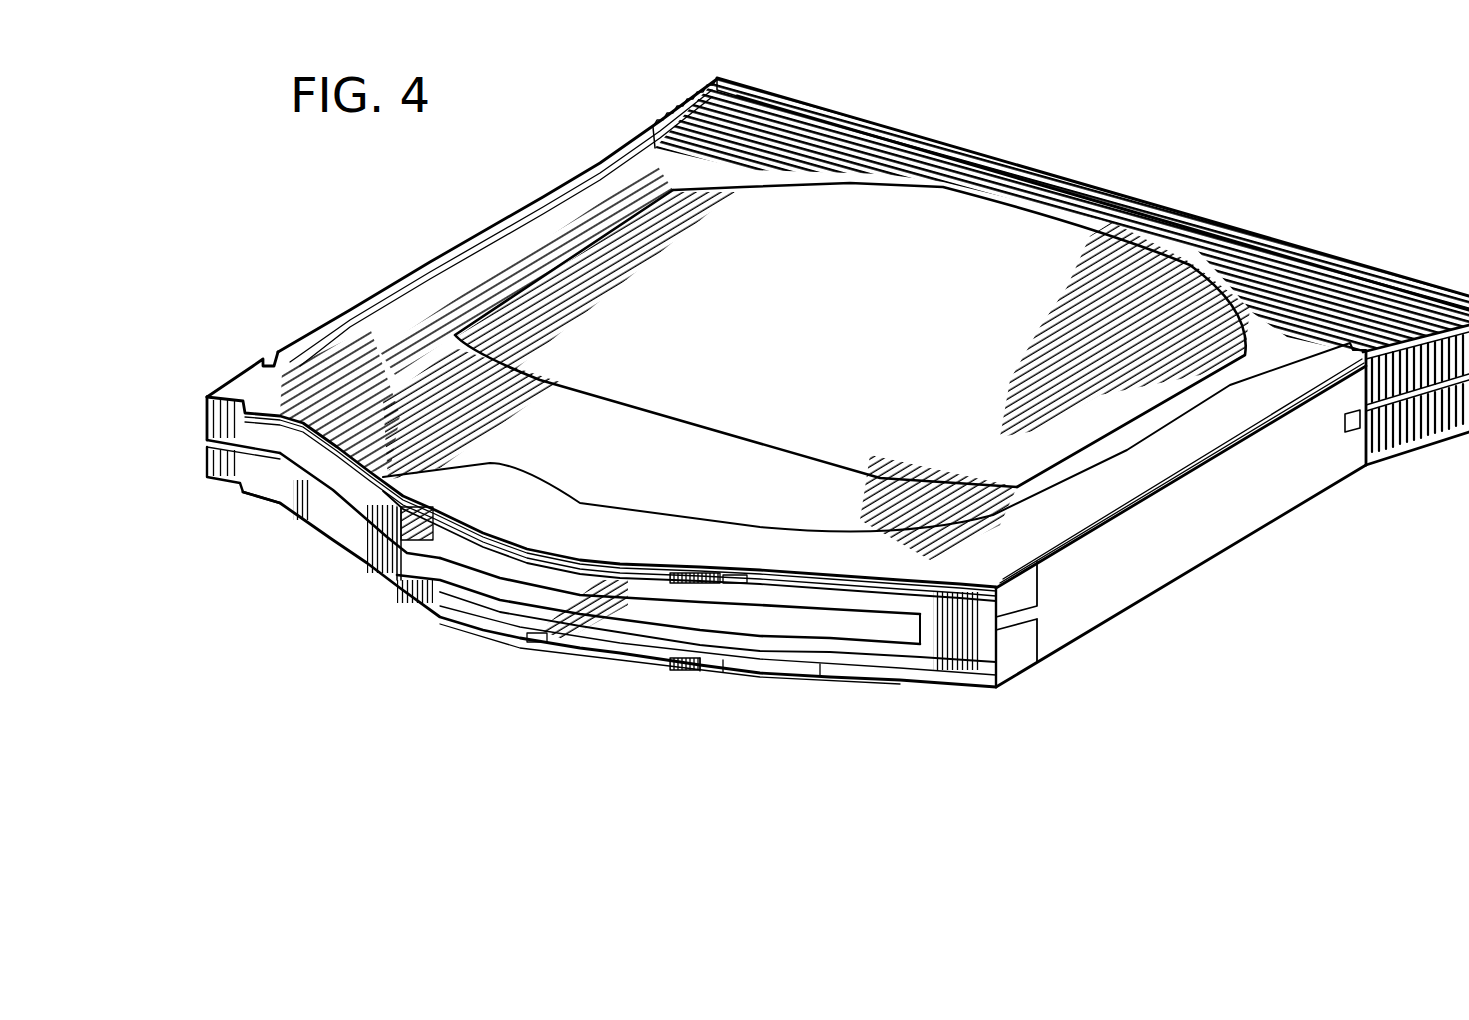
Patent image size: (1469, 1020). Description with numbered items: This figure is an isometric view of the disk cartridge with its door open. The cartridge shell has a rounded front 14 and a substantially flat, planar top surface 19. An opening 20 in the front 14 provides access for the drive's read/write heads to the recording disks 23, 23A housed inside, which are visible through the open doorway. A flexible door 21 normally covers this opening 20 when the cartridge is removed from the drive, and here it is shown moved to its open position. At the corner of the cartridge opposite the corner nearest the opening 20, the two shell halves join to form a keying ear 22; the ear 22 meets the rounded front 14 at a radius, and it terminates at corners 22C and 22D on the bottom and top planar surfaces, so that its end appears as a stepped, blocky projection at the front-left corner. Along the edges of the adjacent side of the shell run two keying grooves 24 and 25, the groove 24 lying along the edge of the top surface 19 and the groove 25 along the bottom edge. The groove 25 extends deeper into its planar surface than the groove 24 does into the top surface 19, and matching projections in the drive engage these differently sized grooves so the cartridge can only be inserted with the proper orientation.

The front 14 is at (748, 580).
The top planar surface 19 is at (397, 318).
The opening 20 is at (803, 627).
The flexible door 21 is at (1093, 603).
The keying ear 22 is at (240, 440).
The corner of keying ear 22C is at (203, 452).
The corner of keying ear 22D is at (204, 418).
The recording disk 23 is at (627, 630).
The recording disk 23A is at (688, 608).
The keying groove 24 is at (283, 348).
The keying groove 25 is at (222, 478).